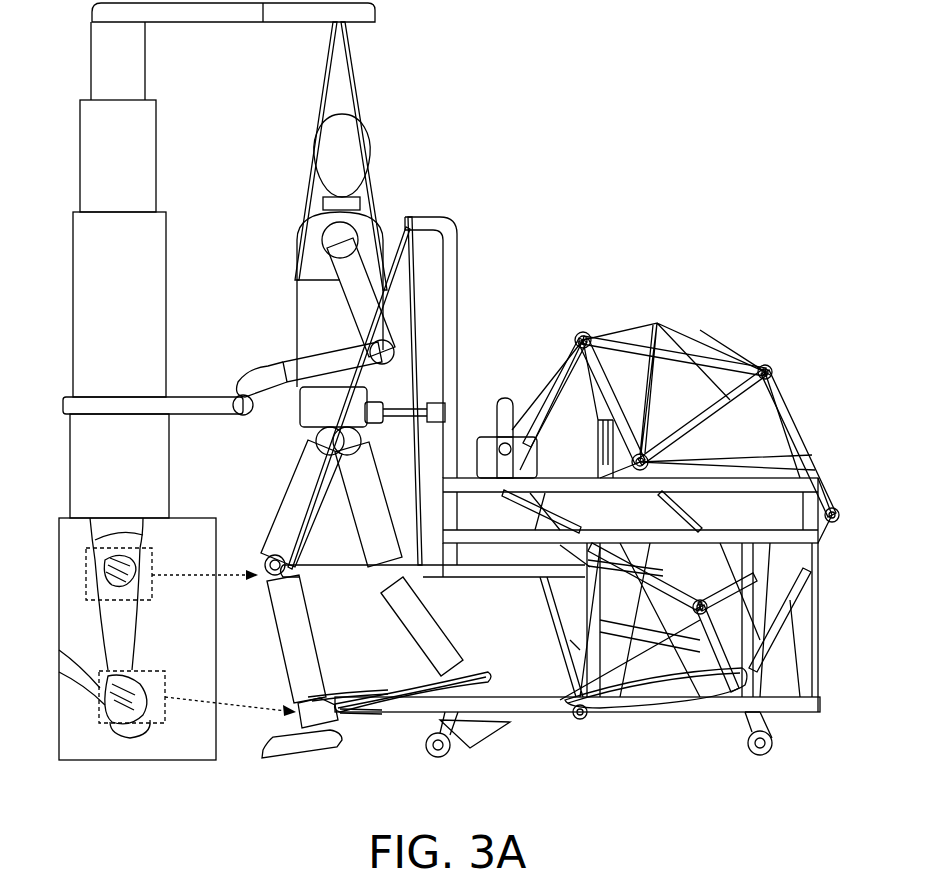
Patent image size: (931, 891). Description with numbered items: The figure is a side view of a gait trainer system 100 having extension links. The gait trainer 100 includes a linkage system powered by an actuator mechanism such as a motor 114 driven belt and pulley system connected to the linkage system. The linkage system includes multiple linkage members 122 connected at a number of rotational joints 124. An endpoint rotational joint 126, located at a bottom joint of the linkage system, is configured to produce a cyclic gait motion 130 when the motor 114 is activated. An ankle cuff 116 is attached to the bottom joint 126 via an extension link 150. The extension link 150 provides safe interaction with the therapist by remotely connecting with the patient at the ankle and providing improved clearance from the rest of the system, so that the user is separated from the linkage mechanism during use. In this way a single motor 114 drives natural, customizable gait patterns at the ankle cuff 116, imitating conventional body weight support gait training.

The gait trainer system 100 is at (560, 426).
The motor 114 is at (487, 426).
The ankle cuff 116 is at (288, 718).
The linkage members 122 is at (678, 512).
The rotational joints 124 is at (572, 333).
The endpoint rotational joint 126 is at (574, 730).
The cyclic gait motion 130 is at (660, 728).
The extension link 150 is at (487, 590).